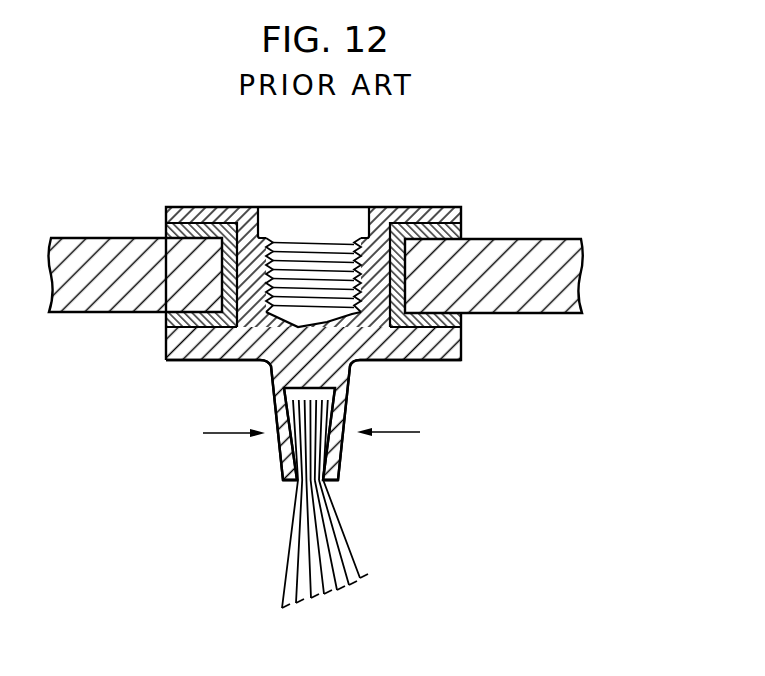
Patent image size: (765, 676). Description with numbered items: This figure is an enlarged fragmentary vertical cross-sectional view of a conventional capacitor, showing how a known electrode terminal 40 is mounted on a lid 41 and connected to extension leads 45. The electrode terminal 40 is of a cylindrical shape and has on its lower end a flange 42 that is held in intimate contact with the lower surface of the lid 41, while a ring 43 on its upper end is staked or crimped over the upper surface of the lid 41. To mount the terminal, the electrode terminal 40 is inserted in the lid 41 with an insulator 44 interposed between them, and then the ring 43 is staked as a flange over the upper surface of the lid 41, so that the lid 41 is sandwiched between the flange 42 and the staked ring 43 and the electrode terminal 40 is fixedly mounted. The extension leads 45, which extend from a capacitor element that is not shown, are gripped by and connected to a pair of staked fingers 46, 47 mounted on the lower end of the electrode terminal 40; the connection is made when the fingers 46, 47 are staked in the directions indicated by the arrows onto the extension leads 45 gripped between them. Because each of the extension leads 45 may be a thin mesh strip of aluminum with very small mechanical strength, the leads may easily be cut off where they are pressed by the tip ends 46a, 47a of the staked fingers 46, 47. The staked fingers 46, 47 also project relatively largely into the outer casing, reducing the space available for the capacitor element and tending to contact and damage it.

The electrode terminal 40 is at (462, 192).
The lid 41 is at (80, 237).
The flange 42 is at (203, 345).
The ring 43 is at (203, 210).
The insulator 44 is at (238, 212).
The extension leads 45 is at (343, 538).
The staked finger 46 is at (292, 464).
The tip end of staked finger 46a is at (296, 483).
The staked finger 47 is at (341, 466).
The tip end of staked finger 47a is at (328, 483).